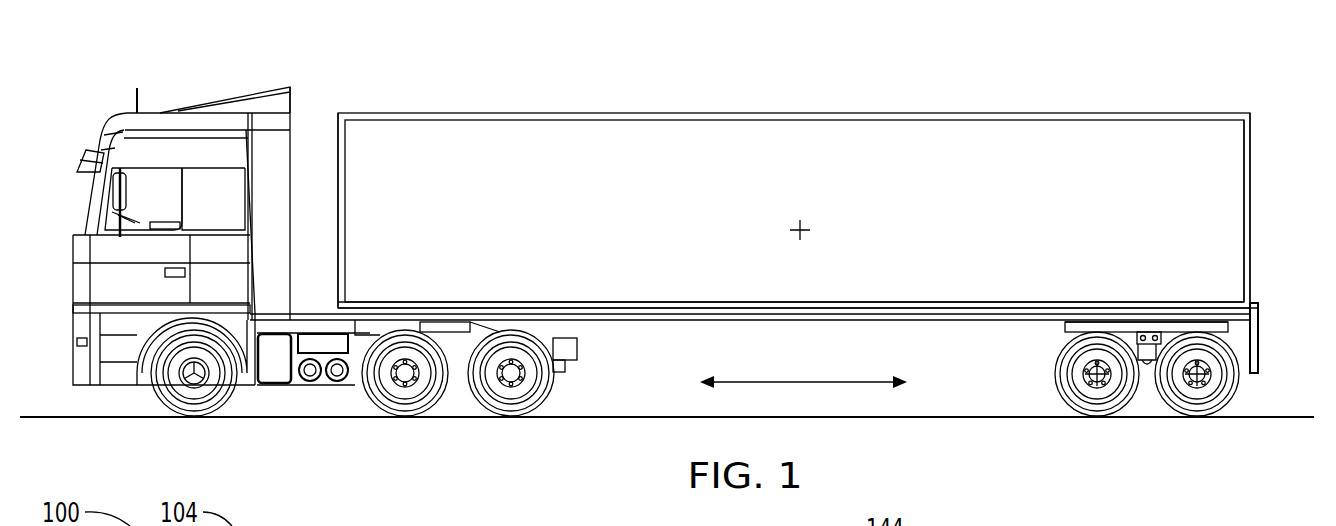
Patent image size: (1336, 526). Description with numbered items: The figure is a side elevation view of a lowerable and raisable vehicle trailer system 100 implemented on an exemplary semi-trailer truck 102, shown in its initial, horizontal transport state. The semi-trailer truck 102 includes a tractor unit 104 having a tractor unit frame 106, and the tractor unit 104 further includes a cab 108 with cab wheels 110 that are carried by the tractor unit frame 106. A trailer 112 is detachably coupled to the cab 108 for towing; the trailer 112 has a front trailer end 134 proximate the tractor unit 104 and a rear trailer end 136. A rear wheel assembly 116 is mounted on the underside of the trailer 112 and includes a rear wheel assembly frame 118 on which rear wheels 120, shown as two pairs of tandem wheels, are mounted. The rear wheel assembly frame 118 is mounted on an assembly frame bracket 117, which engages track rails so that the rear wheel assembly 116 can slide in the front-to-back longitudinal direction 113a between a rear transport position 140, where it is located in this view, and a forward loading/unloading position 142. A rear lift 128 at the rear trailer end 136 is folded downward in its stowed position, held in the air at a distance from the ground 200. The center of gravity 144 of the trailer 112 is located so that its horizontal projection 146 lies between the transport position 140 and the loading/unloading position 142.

The vehicle trailer system 100 is at (330, 68).
The semi-trailer truck 102 is at (1122, 98).
The tractor unit 104 is at (240, 92).
The tractor unit frame 106 is at (320, 388).
The cab 108 is at (273, 145).
The cab wheels 110 is at (170, 405).
The trailer 112 is at (1265, 229).
The longitudinal direction 113a is at (793, 382).
The rear wheel assembly 116 is at (1052, 329).
The assembly frame bracket 117 is at (1128, 327).
The rear wheel assembly frame 118 is at (1150, 368).
The rear wheels 120 is at (1063, 398).
The rear lift 128 is at (1258, 343).
The front trailer end 134 is at (330, 222).
The rear trailer end 136 is at (1250, 170).
The transport position 140 is at (1153, 325).
The loading/unloading position 142 is at (655, 320).
The center of gravity 144 is at (800, 230).
The horizontal projection 146 is at (800, 320).
The ground 200 is at (1276, 417).